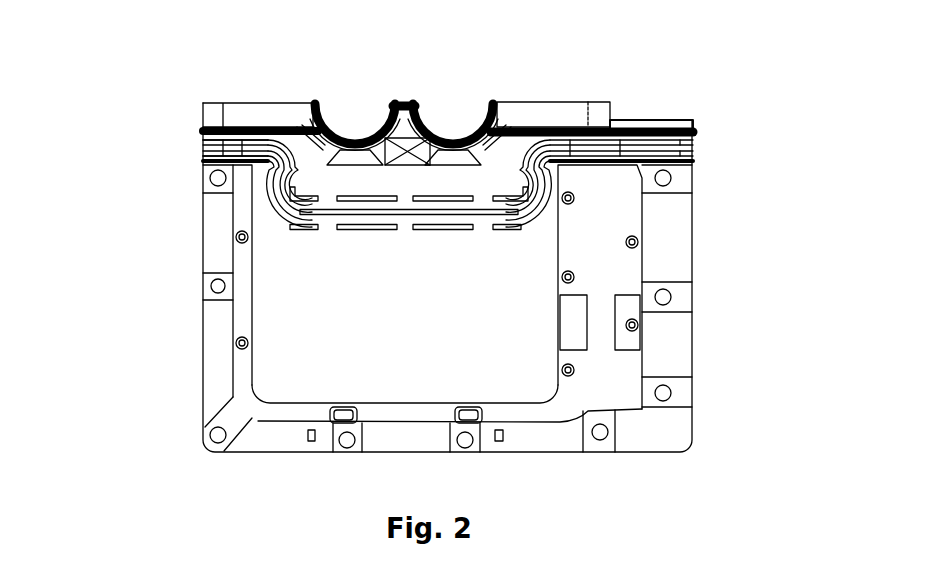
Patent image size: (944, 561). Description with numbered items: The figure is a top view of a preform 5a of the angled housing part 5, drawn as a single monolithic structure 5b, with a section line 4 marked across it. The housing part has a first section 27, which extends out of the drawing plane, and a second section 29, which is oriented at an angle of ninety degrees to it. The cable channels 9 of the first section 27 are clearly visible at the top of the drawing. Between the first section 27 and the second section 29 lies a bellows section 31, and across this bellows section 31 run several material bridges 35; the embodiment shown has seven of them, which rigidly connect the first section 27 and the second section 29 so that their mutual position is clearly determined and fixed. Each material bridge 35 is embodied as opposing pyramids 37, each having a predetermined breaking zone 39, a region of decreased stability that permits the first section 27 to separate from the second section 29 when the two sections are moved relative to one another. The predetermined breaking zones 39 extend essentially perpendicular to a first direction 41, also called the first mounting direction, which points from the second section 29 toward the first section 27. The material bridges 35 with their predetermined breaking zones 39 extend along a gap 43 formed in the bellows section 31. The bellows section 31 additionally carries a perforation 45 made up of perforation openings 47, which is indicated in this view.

The section line IV-IV 4 is at (508, 98).
The angled housing part 5 is at (631, 100).
The preform 5a is at (651, 126).
The monolithic structure 5b is at (651, 126).
The cable channels 9 is at (367, 124).
The first section 27 is at (280, 110).
The second section 29 is at (440, 365).
The bellows section 31 is at (703, 120).
The material bridge 35 is at (505, 228).
The opposing pyramids 37 is at (210, 140).
The predetermined breaking zone 39 is at (235, 148).
The first direction 41 is at (803, 128).
The gap 43 is at (676, 132).
The perforation 45 is at (272, 236).
The perforation openings 47 is at (350, 241).